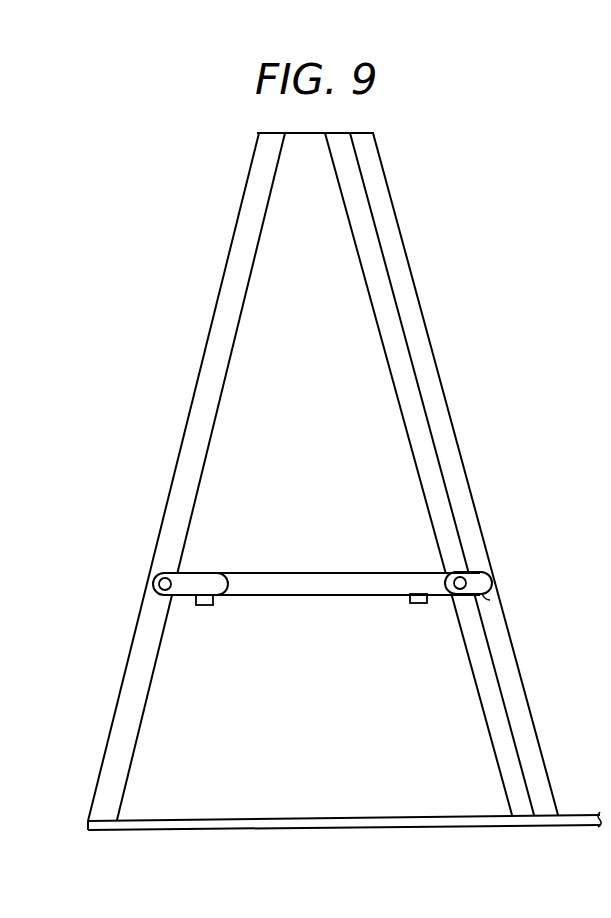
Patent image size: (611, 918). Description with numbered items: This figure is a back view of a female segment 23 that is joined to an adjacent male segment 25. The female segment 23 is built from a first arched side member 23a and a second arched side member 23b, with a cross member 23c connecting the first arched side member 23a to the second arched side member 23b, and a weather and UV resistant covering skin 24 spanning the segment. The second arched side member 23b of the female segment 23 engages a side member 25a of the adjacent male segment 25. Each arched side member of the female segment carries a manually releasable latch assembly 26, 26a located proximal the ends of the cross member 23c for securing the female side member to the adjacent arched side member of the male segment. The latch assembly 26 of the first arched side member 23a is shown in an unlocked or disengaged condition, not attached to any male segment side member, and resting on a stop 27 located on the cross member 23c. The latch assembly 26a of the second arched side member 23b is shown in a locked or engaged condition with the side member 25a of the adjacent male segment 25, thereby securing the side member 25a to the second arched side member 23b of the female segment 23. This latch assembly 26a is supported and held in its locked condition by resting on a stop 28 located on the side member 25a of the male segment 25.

The female segment 23 is at (190, 260).
The first arched side member 23a is at (200, 372).
The second arched side member 23b is at (387, 332).
The cross member 23c is at (307, 596).
The weather and UV resistant covering skin 24 is at (325, 447).
The male segment 25 is at (456, 428).
The side member 25a is at (473, 518).
The latch assembly 26 is at (173, 573).
The latch assembly 26a is at (487, 572).
The stop 27 is at (203, 605).
The stop 28 is at (484, 598).